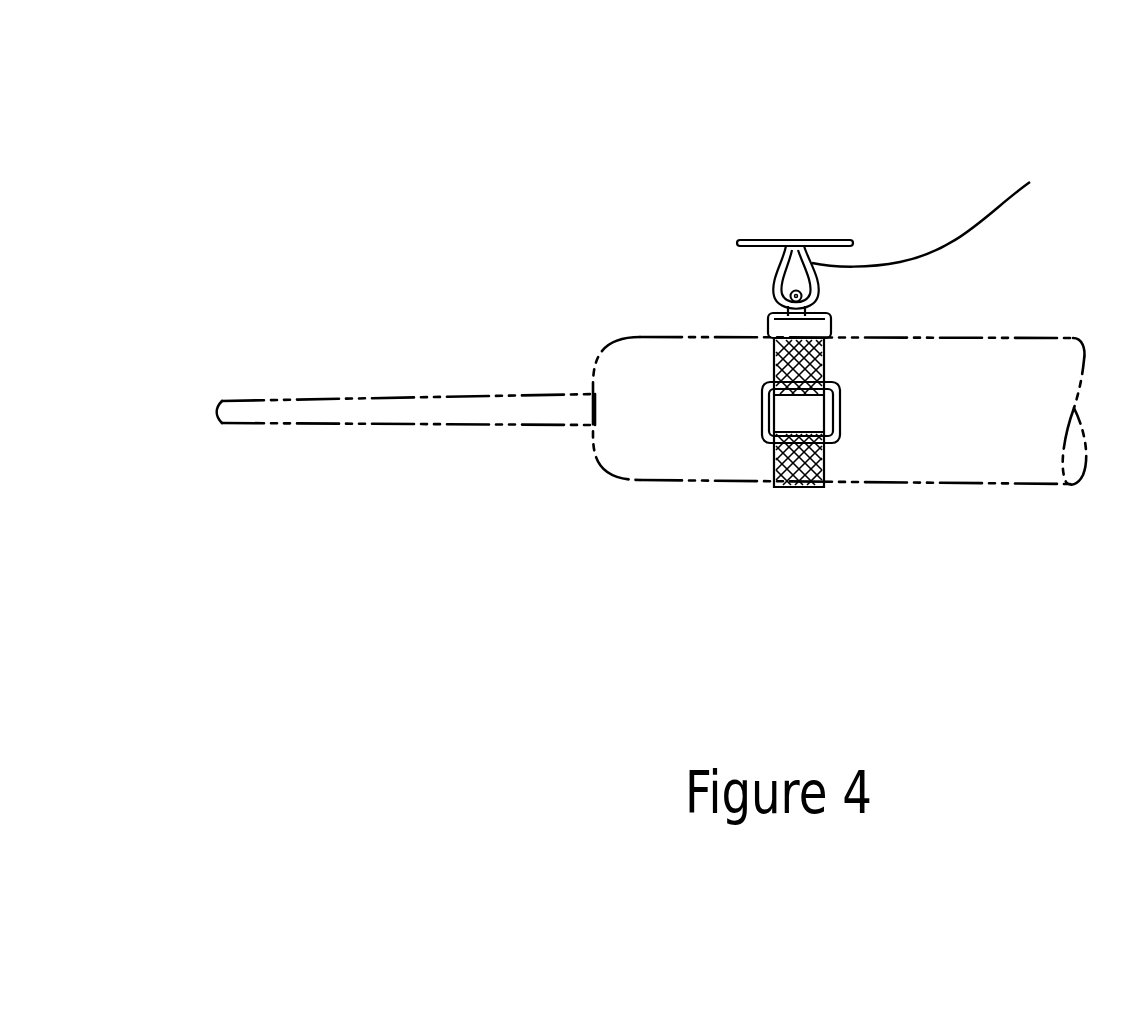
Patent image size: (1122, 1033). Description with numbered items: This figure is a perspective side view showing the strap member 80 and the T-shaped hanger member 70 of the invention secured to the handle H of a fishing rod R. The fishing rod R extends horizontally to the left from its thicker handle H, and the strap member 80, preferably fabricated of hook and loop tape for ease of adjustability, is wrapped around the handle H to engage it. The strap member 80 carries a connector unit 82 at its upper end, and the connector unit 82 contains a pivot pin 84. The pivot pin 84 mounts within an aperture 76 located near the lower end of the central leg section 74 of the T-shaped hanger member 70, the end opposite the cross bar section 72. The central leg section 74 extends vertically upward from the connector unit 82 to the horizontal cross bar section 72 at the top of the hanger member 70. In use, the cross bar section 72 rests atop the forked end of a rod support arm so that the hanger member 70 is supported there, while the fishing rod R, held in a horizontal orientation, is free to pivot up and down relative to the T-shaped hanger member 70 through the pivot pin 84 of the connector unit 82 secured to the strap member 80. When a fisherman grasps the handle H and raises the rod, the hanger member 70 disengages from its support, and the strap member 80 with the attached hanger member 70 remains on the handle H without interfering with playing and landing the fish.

The T-shaped hanger member 70 is at (798, 216).
The cross bar section 72 is at (846, 238).
The central leg section 74 is at (958, 206).
The aperture 76 is at (795, 283).
The strap member 80 is at (775, 360).
The connector unit 82 is at (834, 318).
The pivot pin 84 is at (788, 299).
The fishing rod R is at (480, 408).
The handle H is at (992, 438).